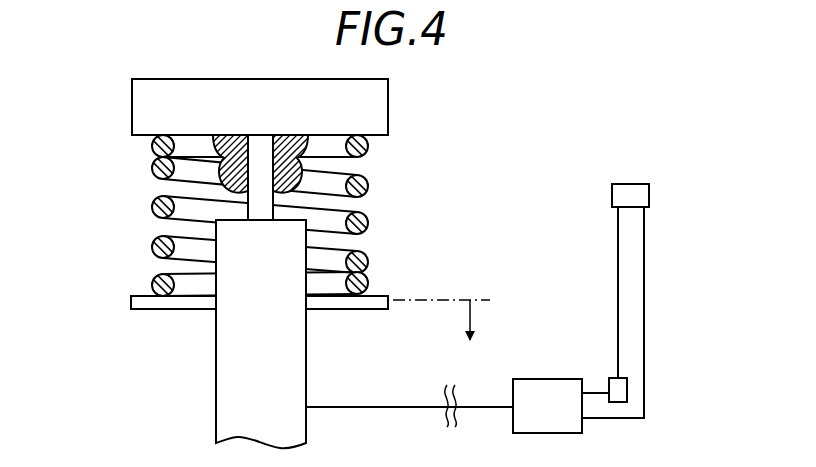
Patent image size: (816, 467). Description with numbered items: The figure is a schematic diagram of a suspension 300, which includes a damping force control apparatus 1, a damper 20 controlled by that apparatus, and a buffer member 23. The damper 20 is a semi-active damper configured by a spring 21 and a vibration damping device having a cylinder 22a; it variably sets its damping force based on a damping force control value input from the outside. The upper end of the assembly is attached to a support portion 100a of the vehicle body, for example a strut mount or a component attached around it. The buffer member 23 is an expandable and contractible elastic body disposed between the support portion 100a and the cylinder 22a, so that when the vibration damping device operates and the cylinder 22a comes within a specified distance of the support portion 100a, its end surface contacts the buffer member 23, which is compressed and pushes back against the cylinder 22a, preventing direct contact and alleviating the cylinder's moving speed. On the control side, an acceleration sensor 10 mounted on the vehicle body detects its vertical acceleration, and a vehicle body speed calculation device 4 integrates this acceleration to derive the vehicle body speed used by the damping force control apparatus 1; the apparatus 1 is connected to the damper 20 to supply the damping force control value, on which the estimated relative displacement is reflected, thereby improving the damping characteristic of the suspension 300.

The suspension 300 is at (716, 122).
The damper 20 is at (110, 256).
The spring 21 is at (368, 221).
The buffer member 23 is at (308, 137).
The support portion 100a is at (388, 104).
The cylinder 22a is at (221, 390).
The acceleration sensor 10 is at (612, 191).
The damping force control apparatus 1 is at (547, 379).
The vehicle body speed calculation device 4 is at (614, 378).